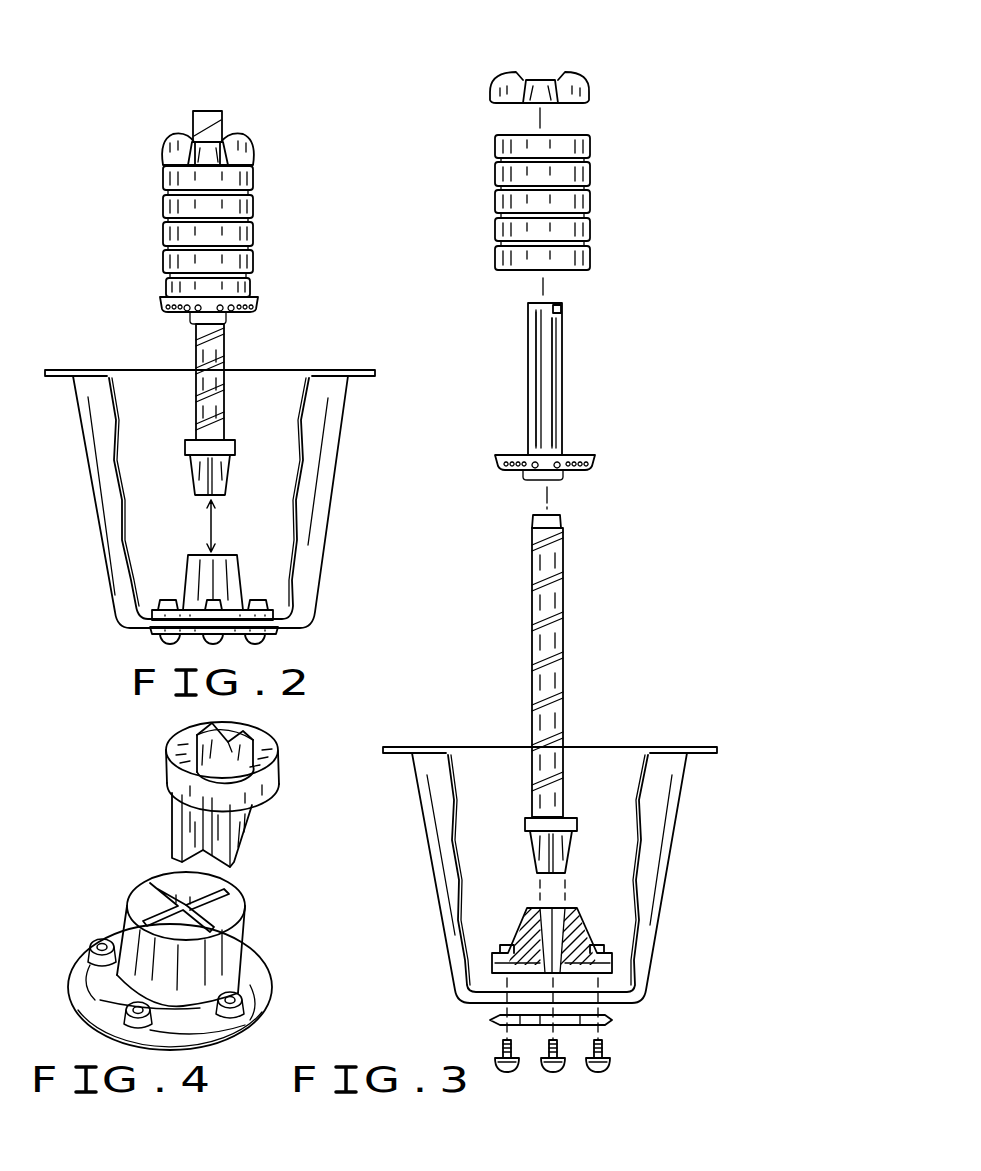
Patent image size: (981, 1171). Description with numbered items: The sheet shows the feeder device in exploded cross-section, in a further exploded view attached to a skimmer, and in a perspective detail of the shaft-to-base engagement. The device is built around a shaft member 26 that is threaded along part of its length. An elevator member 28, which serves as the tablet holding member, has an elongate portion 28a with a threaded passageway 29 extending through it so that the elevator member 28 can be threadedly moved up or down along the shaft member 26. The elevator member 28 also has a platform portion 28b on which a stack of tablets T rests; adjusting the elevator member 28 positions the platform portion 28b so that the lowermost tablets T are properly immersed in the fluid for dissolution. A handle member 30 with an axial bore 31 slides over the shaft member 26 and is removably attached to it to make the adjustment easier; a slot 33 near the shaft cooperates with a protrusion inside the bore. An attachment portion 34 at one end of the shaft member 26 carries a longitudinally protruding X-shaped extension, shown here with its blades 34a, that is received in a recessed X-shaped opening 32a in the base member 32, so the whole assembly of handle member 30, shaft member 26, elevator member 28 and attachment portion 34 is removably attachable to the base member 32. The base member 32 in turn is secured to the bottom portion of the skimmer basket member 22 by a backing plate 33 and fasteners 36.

In FIG. 2, the skimmer basket member 22 is at (333, 486).
In FIG. 3, the skimmer basket member 22 is at (672, 870).
In FIG. 2, the shaft member 26 is at (196, 400).
In FIG. 3, the shaft member 26 is at (566, 630).
In FIG. 4, the shaft member 26 is at (256, 752).
In FIG. 3, the elevator member 28 is at (564, 366).
In FIG. 3, the elongate portion 28a is at (528, 399).
In FIG. 2, the platform portion 28b is at (262, 303).
In FIG. 3, the platform portion 28b is at (598, 462).
In FIG. 3, the passageway 29 is at (562, 398).
In FIG. 2, the handle member 30 is at (262, 138).
In FIG. 3, the handle member 30 is at (590, 86).
In FIG. 3, the axial bore 31 is at (543, 78).
In FIG. 2, the base member 32 is at (240, 568).
In FIG. 3, the base member 32 is at (580, 928).
In FIG. 4, the base member 32 is at (250, 972).
In FIG. 4, the X shaped opening 32a is at (206, 903).
In FIG. 2, the backing plate 33 is at (238, 636).
In FIG. 3, the backing plate 33 is at (562, 313).
In FIG. 2, the attachment portion 34 is at (233, 470).
In FIG. 3, the attachment portion 34 is at (570, 840).
In FIG. 4, the attachment portion 34 is at (170, 778).
In FIG. 4, the collar blades 34a is at (172, 826).
In FIG. 2, the fasteners 36 is at (160, 638).
In FIG. 3, the fasteners 36 is at (553, 1070).
In FIG. 2, the tablets T is at (256, 207).
In FIG. 3, the tablets T is at (594, 172).